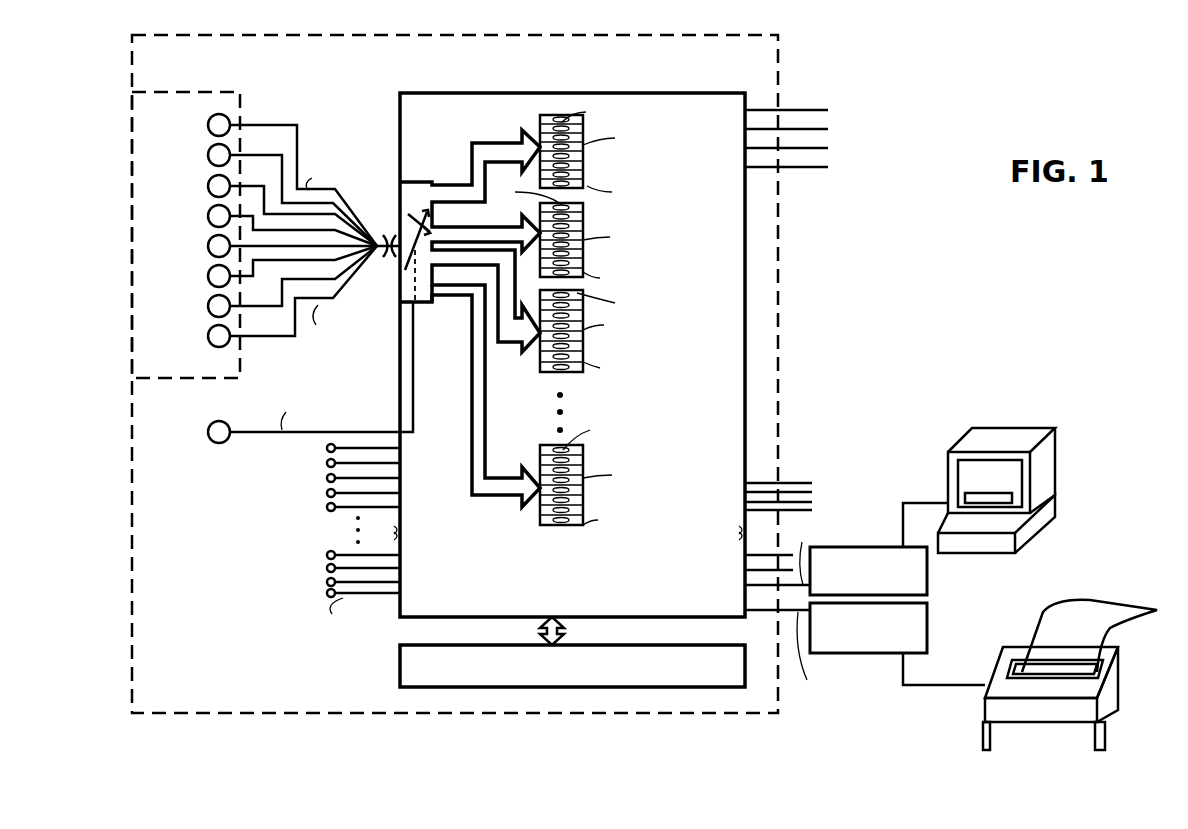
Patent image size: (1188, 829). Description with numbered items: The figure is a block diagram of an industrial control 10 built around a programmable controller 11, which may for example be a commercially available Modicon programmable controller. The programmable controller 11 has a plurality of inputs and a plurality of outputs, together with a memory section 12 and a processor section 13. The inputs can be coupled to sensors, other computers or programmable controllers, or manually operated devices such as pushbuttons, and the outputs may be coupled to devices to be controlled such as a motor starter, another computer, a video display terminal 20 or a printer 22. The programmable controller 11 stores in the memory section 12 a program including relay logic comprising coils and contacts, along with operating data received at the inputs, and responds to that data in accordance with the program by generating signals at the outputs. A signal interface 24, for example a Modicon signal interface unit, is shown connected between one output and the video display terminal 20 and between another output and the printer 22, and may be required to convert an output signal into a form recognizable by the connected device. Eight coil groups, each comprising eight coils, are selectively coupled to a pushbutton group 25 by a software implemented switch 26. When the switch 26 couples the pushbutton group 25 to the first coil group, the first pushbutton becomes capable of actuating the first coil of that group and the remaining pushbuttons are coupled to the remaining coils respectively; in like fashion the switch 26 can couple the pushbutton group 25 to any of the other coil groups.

The industrial control 10 is at (641, 773).
The programmable controller 11 is at (778, 346).
The memory section 12 is at (650, 86).
The processor section 13 is at (400, 655).
The video display terminal 20 is at (1010, 428).
The printer 22 is at (1118, 668).
The signal interface 24 is at (927, 577).
The pushbutton group 25 is at (242, 91).
The software implemented switch 26 is at (420, 175).